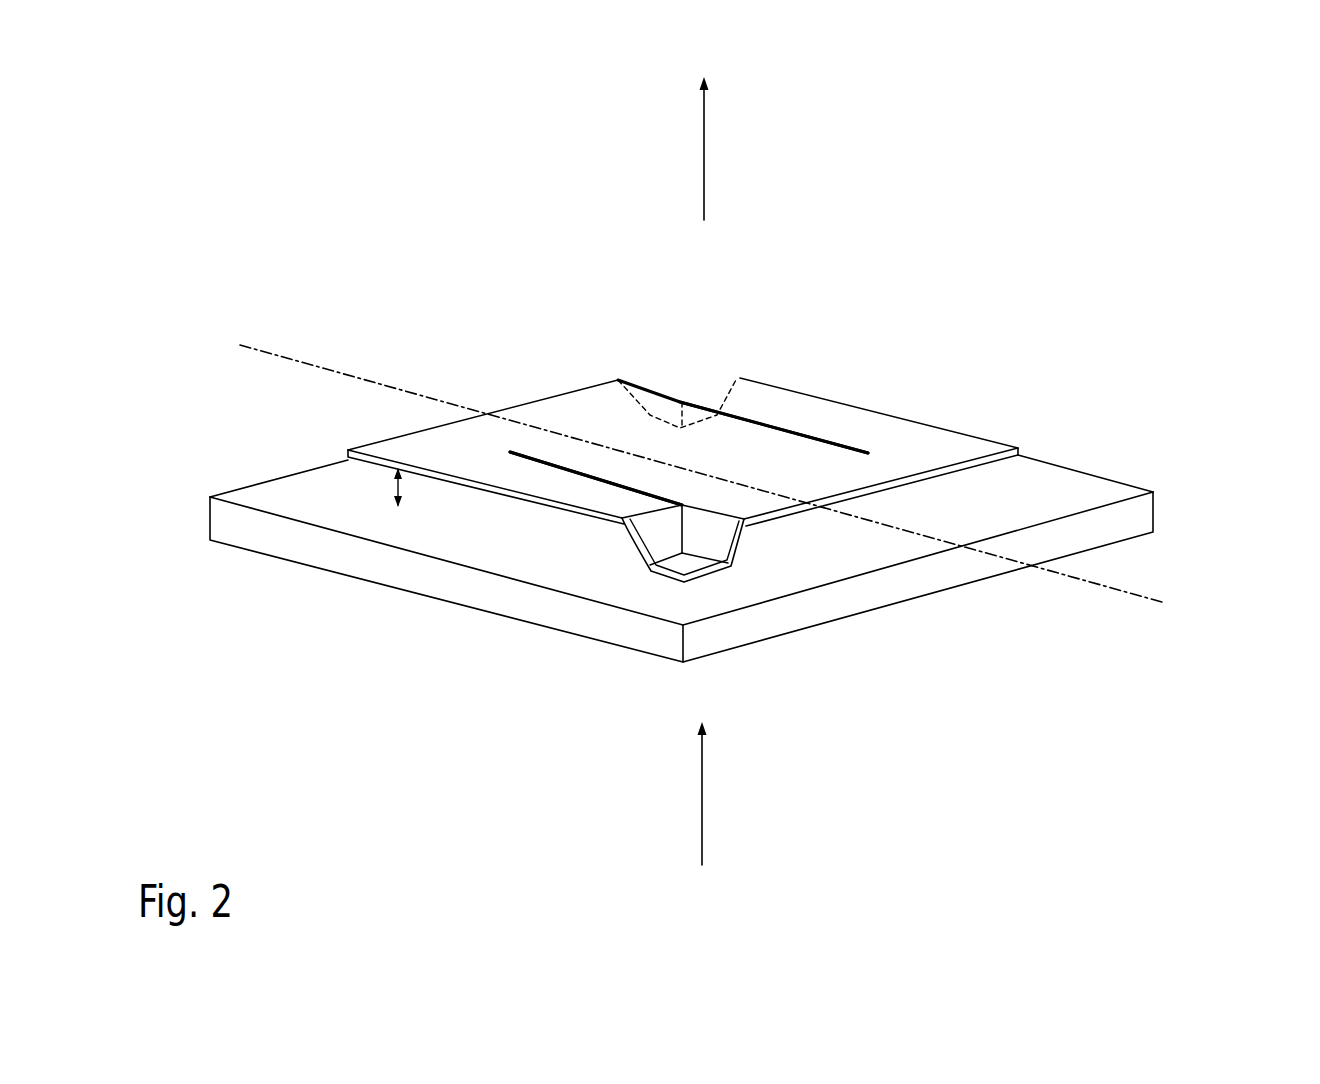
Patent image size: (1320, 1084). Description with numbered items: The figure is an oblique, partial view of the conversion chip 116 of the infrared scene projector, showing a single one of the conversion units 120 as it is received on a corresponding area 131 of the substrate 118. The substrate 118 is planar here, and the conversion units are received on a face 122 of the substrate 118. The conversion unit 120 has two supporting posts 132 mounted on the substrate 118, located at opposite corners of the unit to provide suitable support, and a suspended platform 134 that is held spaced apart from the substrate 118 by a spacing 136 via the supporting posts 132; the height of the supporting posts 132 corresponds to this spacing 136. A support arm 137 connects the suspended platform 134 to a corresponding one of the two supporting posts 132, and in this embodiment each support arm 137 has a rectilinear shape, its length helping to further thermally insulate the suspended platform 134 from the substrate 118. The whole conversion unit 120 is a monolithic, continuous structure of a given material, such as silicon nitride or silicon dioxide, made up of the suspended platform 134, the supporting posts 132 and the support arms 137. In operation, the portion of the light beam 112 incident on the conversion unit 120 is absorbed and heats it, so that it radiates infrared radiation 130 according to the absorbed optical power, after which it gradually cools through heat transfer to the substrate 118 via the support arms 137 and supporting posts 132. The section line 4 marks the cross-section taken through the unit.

The section line 4- 4 is at (345, 397).
The light beam 112 is at (702, 792).
The conversion chip 116 is at (724, 458).
The substrate 118 is at (724, 531).
The conversion unit 120 is at (683, 491).
The face 122 is at (694, 513).
The infrared radiation 130 is at (705, 148).
The area 131 is at (1020, 490).
The supporting post 132 is at (683, 400).
The suspended platform 134 is at (735, 457).
The spacing 136 is at (398, 488).
The support arm 137 is at (548, 483).